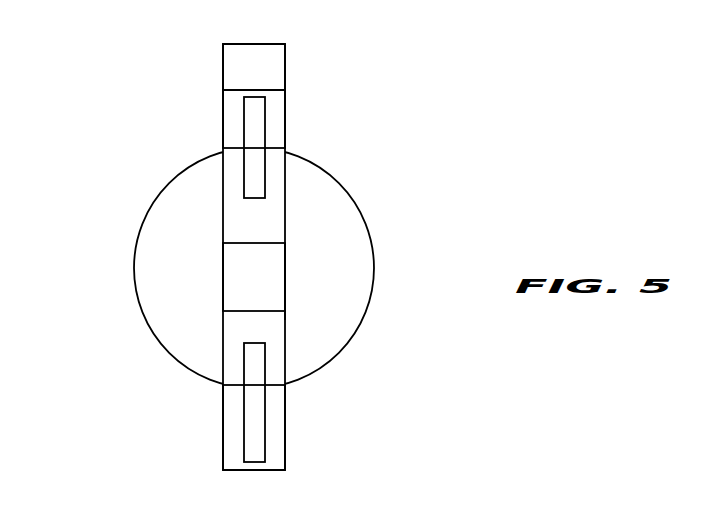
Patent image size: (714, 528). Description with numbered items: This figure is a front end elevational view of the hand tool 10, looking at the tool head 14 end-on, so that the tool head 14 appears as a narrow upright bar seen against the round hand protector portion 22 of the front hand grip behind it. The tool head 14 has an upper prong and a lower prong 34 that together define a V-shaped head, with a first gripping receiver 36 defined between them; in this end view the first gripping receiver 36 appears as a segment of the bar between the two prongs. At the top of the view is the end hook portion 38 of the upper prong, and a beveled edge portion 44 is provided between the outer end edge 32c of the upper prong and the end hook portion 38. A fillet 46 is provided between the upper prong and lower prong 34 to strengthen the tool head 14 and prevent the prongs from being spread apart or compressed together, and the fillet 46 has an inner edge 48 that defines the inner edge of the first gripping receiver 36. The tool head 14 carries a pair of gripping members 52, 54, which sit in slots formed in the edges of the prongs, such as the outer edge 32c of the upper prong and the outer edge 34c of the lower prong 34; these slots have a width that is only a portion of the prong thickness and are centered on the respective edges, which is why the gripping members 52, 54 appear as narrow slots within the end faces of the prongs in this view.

The hand tool 10 is at (100, 248).
The tool head 14 is at (408, 404).
The hand protector portion 22 is at (357, 202).
The outer edge of the upper prong 32c is at (233, 112).
The lower prong 34 is at (285, 417).
The outer edge of the lower prong 34c is at (285, 458).
The first gripping receiver 36 is at (262, 291).
The end hook portion 38 is at (285, 70).
The beveled edge portion 44 is at (229, 68).
The fillet 46 is at (285, 302).
The inner edge of the fillet 48 is at (285, 280).
The gripping member 52 is at (253, 167).
The gripping member 54 is at (253, 440).